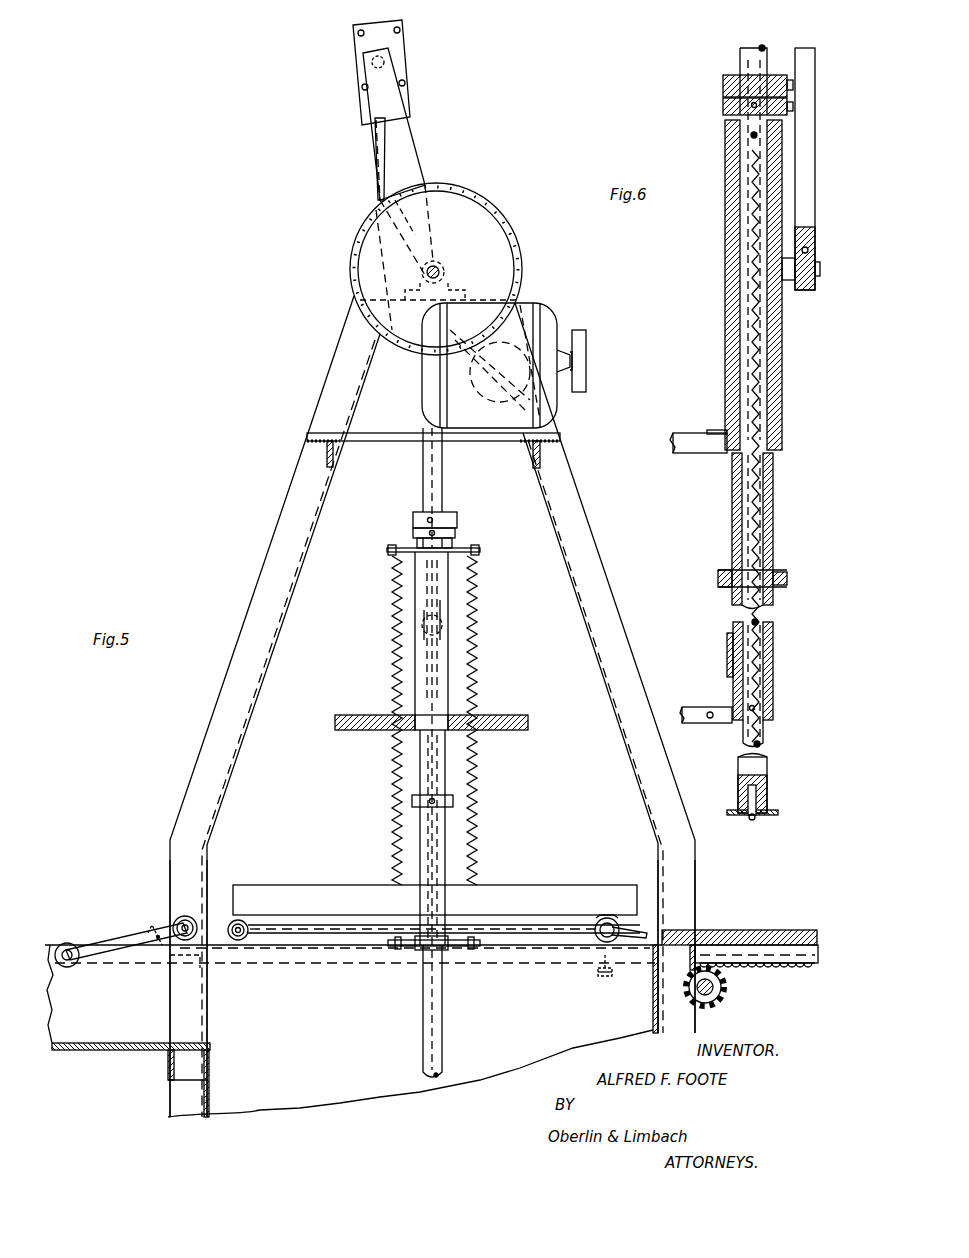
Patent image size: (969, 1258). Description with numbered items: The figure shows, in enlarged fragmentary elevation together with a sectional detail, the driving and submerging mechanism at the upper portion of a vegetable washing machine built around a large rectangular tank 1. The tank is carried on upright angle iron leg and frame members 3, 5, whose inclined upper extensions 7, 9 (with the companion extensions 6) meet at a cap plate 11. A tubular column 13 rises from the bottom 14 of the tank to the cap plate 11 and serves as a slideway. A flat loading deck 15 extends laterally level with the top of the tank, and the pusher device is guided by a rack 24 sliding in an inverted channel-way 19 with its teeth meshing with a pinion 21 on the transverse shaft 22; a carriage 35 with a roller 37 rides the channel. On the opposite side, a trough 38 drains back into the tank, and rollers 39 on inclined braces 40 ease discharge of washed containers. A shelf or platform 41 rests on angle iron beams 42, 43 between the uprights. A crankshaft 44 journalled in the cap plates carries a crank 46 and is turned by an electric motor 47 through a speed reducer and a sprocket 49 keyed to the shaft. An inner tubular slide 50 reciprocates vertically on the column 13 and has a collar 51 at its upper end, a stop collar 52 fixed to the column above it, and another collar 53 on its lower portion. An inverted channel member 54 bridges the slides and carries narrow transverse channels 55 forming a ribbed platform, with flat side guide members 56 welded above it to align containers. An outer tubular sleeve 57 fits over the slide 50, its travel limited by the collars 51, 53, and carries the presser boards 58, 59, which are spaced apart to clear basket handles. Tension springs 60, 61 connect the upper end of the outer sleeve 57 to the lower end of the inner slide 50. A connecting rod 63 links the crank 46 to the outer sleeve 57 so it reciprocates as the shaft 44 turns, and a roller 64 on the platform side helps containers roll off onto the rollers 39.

In FIG. 5, the tank 1 is at (282, 1120).
In FIG. 5, the leg and frame member 3 is at (680, 887).
In FIG. 5, the leg and frame member 5 is at (170, 878).
In FIG. 5, the upper extension 6 is at (402, 492).
In FIG. 5, the upper extension 7 is at (583, 565).
In FIG. 5, the upper extension 9 is at (275, 567).
In FIG. 5, the cap plate 11 is at (350, 268).
In FIG. 5, the tubular column 13 is at (441, 1024).
In FIG. 6, the tubular column 13 is at (745, 57).
In FIG. 6, the bottom 14 is at (770, 815).
In FIG. 5, the loading deck 15 is at (772, 930).
In FIG. 5, the inverted channel-way 19 is at (782, 960).
In FIG. 5, the pinion 21 is at (722, 1002).
In FIG. 5, the transverse shaft 22 is at (698, 988).
In FIG. 5, the rack 24 is at (762, 964).
In FIG. 5, the carriage 35 is at (597, 972).
In FIG. 5, the roller 37 is at (600, 920).
In FIG. 5, the trough 38 is at (110, 1050).
In FIG. 5, the roller 39 is at (172, 922).
In FIG. 5, the inclined brace 40 is at (118, 958).
In FIG. 5, the platform 41 is at (362, 435).
In FIG. 5, the angle iron beam 42 is at (327, 455).
In FIG. 5, the angle iron beam 43 is at (540, 455).
In FIG. 5, the crankshaft 44 is at (440, 266).
In FIG. 5, the crank 46 is at (420, 165).
In FIG. 5, the electric motor 47 is at (538, 318).
In FIG. 5, the sprocket 49 is at (440, 207).
In FIG. 5, the inner tubular slide 50 is at (420, 760).
In FIG. 6, the inner tubular slide 50 is at (770, 517).
In FIG. 5, the collar 51 is at (455, 532).
In FIG. 6, the collar 51 is at (723, 108).
In FIG. 5, the stop collar 52 is at (450, 520).
In FIG. 6, the stop collar 52 is at (723, 85).
In FIG. 5, the collar 53 is at (455, 801).
In FIG. 6, the collar 53 is at (718, 580).
In FIG. 5, the inverted channel member 54 is at (420, 948).
In FIG. 6, the inverted channel member 54 is at (693, 707).
In FIG. 5, the channel 55 is at (333, 935).
In FIG. 5, the side guide member 56 is at (540, 885).
In FIG. 6, the side guide member 56 is at (727, 650).
In FIG. 5, the outer tubular sleeve 57 is at (450, 690).
In FIG. 6, the outer tubular sleeve 57 is at (727, 265).
In FIG. 5, the wooden board 58 is at (365, 722).
In FIG. 6, the wooden board 58 is at (690, 440).
In FIG. 5, the wooden board 59 is at (500, 722).
In FIG. 5, the tension spring 60 is at (392, 603).
In FIG. 6, the tension spring 60 is at (748, 325).
In FIG. 5, the tension spring 61 is at (477, 603).
In FIG. 5, the connecting rod 63 is at (375, 183).
In FIG. 6, the connecting rod 63 is at (805, 52).
In FIG. 5, the roller 64 is at (240, 942).